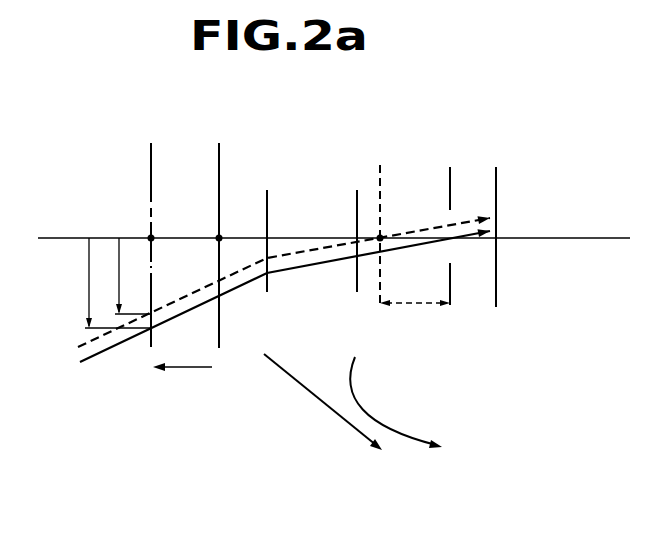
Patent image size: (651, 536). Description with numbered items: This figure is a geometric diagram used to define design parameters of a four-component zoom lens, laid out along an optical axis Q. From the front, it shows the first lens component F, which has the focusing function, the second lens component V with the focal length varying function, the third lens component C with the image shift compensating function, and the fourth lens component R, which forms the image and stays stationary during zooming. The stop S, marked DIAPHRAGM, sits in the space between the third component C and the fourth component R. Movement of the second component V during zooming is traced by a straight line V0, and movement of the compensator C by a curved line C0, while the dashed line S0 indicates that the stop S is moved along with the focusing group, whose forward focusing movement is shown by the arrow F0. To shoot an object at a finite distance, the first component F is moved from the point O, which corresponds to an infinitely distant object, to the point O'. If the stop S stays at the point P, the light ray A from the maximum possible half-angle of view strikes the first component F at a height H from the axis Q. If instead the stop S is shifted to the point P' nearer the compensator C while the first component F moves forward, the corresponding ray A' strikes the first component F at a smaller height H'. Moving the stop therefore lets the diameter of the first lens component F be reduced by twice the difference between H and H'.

The optical axis Q is at (47, 237).
The first lens component F is at (151, 143).
The point O' is at (166, 216).
The point of position O is at (232, 245).
The second lens component V is at (267, 190).
The third lens component C is at (357, 190).
The stop S is at (450, 167).
The fourth lens component R is at (496, 167).
The point P' is at (398, 211).
The point P is at (464, 265).
The light ray A is at (276, 314).
The light ray A' is at (269, 289).
The height H is at (111, 283).
The height H' is at (126, 276).
The arrow F0 is at (210, 367).
The straight line V0 is at (300, 384).
The curved line C0 is at (359, 402).
The dashed line S0 is at (410, 304).
The diaphragm DIAPHRAGM is at (450, 292).